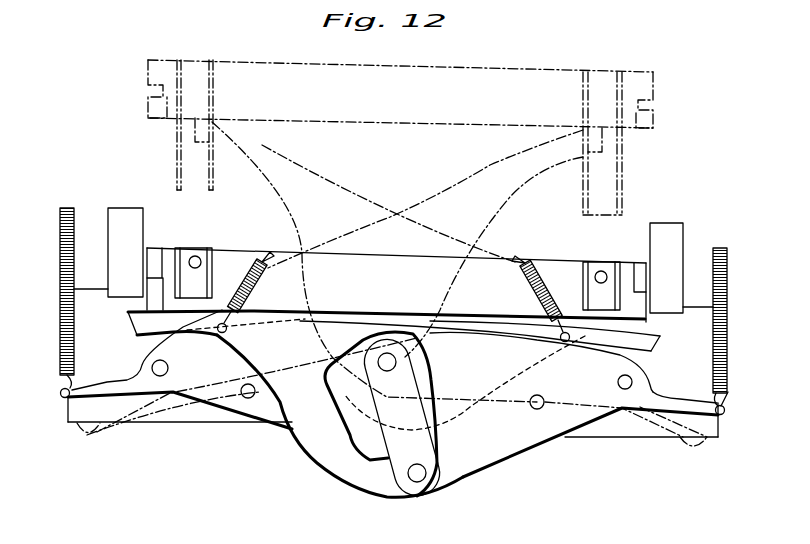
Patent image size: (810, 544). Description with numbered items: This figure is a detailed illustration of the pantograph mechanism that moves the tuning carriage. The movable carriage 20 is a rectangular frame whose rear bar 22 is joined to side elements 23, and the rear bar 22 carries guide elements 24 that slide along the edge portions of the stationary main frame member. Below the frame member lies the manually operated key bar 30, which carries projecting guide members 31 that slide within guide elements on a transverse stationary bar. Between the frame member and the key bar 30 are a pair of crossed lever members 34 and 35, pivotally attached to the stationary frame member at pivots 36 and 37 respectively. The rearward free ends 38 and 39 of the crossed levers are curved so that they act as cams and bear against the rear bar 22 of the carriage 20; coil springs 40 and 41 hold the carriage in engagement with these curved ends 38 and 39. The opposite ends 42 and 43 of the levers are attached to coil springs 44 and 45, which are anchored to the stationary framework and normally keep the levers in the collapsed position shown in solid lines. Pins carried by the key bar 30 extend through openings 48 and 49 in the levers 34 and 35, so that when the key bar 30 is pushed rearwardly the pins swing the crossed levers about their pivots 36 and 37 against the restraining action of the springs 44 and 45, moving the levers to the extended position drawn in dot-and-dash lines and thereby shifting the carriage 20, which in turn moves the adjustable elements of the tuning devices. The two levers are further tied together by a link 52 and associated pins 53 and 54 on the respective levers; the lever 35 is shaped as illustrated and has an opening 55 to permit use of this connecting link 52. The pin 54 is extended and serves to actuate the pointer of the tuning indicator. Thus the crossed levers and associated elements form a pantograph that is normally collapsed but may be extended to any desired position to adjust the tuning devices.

The movable carriage 20 is at (392, 290).
The rear bar 22 is at (537, 68).
The side elements 23 is at (200, 252).
The guide elements 24 is at (157, 293).
The key bar 30 is at (368, 400).
The projecting guide members 31 is at (123, 228).
The crossed lever member 34 is at (274, 416).
The crossed lever member 35 is at (528, 450).
The pivot 36 is at (159, 377).
The pivot 37 is at (618, 382).
The rearward free end 38 is at (148, 321).
The rearward free end 39 is at (648, 342).
The coil spring 40 is at (252, 293).
The coil spring 41 is at (568, 292).
The opposite end 42 is at (70, 401).
The opposite end 43 is at (725, 415).
The coil spring 44 is at (62, 235).
The coil spring 45 is at (727, 274).
The opening 48 is at (245, 399).
The opening 49 is at (539, 395).
The link 52 is at (402, 386).
The pin 53 is at (398, 359).
The pin 54 is at (416, 484).
The opening 55 is at (366, 461).